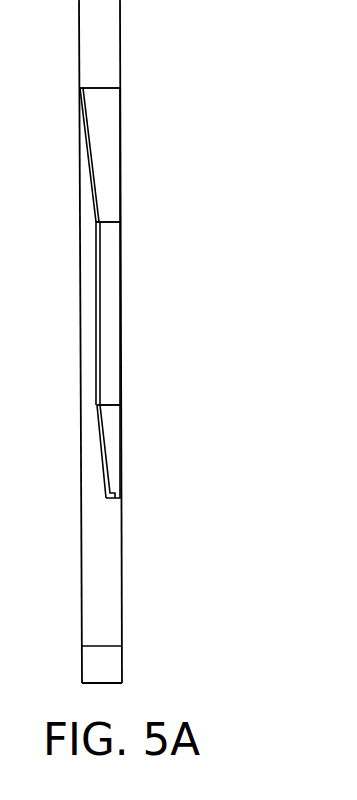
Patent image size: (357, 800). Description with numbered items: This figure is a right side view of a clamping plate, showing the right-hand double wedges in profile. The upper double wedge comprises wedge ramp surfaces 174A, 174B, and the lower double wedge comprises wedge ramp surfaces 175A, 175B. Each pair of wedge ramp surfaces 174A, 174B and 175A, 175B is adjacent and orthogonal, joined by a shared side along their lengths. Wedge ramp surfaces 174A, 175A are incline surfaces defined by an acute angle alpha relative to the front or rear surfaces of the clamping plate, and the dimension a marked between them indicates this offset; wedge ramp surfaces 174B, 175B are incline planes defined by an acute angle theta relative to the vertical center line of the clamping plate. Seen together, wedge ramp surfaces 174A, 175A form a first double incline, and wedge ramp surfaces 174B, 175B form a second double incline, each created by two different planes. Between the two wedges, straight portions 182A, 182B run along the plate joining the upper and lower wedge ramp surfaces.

The wedge ramp surface 174A is at (83, 138).
The wedge ramp surface 174B is at (110, 107).
The straight slot portion A 182A is at (97, 305).
The straight slot portion B 182B is at (108, 300).
The wedge ramp surface 175A is at (98, 440).
The wedge ramp surface 175B is at (113, 432).
The offset dimension a is at (147, 170).